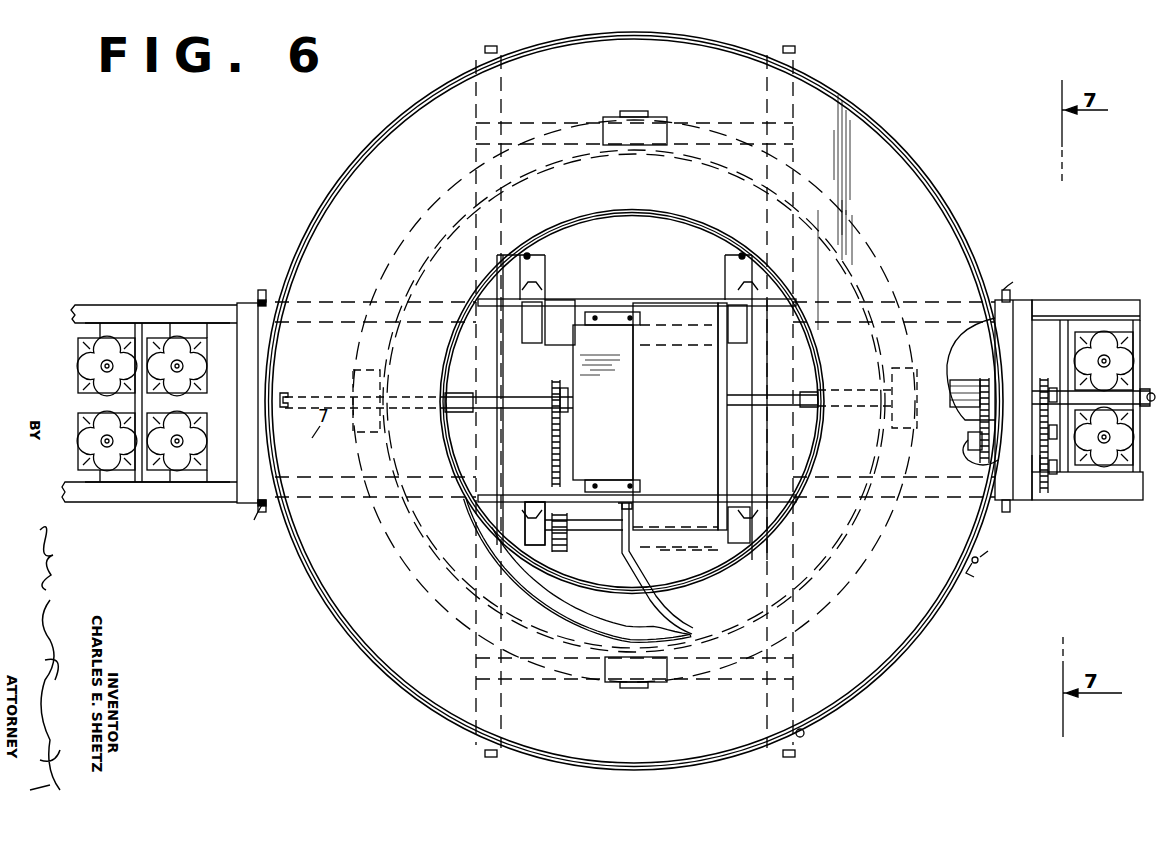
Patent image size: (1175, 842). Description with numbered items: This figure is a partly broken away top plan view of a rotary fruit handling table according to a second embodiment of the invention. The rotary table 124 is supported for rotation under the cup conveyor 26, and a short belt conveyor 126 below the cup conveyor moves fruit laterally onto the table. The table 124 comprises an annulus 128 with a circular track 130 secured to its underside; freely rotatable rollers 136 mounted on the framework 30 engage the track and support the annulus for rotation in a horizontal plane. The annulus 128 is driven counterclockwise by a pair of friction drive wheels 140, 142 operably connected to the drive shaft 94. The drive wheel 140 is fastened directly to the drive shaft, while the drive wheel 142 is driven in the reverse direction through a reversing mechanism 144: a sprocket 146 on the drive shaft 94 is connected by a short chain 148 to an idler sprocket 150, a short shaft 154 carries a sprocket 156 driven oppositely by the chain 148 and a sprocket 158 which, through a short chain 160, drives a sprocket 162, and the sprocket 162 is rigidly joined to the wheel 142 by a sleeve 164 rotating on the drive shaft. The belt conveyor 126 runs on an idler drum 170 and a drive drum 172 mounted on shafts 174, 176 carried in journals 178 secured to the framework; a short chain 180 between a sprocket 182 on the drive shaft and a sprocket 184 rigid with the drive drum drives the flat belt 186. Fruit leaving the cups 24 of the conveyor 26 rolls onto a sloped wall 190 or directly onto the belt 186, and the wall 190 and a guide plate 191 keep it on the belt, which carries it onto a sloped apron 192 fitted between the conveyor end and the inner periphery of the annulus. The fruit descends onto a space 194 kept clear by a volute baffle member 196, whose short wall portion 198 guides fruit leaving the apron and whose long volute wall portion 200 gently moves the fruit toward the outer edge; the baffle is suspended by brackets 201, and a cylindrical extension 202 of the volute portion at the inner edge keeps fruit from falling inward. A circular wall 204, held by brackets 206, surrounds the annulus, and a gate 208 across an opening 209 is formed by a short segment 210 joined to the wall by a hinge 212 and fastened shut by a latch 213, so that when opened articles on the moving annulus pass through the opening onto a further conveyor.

The cups 24 is at (93, 370).
The cup conveyor 26 is at (594, 432).
The framework 30 is at (251, 529).
The drive shaft 94 is at (525, 400).
The table 124 is at (634, 408).
The belt conveyor 126 is at (632, 402).
The annulus 128 is at (634, 401).
The circular track 130 is at (518, 183).
The rollers 136 is at (590, 136).
The friction drive wheel 140 is at (361, 372).
The friction drive wheel 142 is at (910, 367).
The reversing mechanism 144 is at (1055, 372).
The sprocket 146 is at (1049, 375).
The chain 148 is at (1060, 411).
The idler sprocket 150 is at (1041, 491).
The shaft 154 is at (968, 443).
The sprocket 156 is at (1060, 462).
The sprocket 158 is at (970, 473).
The chain 160 is at (978, 439).
The sprocket 162 is at (972, 369).
The sleeve 164 is at (957, 382).
The idler drum 170 is at (630, 312).
The drive drum 172 is at (628, 512).
The shaft 174 is at (555, 324).
The shaft 176 is at (600, 530).
The journals 178 is at (523, 344).
The chain 180 is at (552, 454).
The sprocket 182 is at (558, 420).
The sprocket 184 is at (566, 556).
The belt 186 is at (675, 416).
The sloped wall 190 is at (606, 408).
The guide plate 191 is at (718, 430).
The sloped apron 192 is at (675, 555).
The space 194 is at (689, 579).
The volute baffle member 196 is at (544, 570).
The wall portion 198 is at (678, 612).
The volute wall portion 200 is at (560, 609).
The brackets 201 is at (530, 264).
The extension 202 is at (667, 292).
The circular wall 204 is at (363, 145).
The brackets 206 is at (485, 55).
The gate 208 is at (890, 674).
The opening 209 is at (972, 562).
The segment 210 is at (905, 654).
The hinge 212 is at (806, 736).
The latch 213 is at (985, 562).